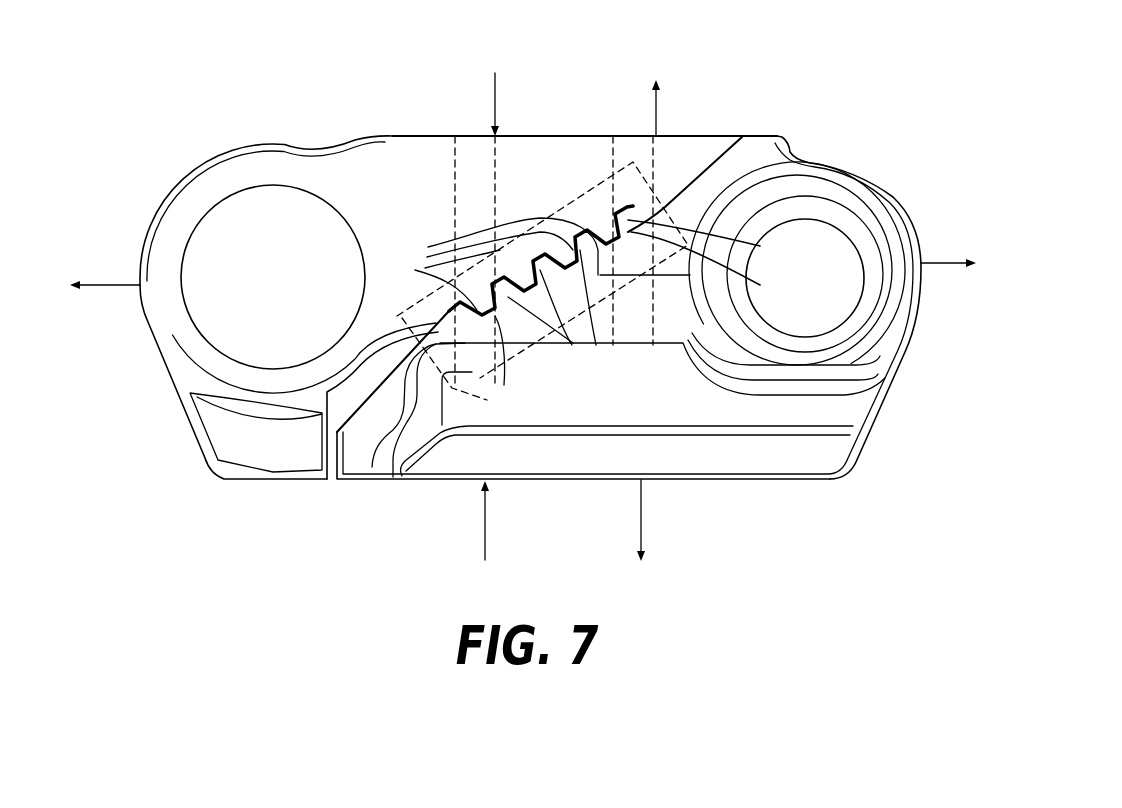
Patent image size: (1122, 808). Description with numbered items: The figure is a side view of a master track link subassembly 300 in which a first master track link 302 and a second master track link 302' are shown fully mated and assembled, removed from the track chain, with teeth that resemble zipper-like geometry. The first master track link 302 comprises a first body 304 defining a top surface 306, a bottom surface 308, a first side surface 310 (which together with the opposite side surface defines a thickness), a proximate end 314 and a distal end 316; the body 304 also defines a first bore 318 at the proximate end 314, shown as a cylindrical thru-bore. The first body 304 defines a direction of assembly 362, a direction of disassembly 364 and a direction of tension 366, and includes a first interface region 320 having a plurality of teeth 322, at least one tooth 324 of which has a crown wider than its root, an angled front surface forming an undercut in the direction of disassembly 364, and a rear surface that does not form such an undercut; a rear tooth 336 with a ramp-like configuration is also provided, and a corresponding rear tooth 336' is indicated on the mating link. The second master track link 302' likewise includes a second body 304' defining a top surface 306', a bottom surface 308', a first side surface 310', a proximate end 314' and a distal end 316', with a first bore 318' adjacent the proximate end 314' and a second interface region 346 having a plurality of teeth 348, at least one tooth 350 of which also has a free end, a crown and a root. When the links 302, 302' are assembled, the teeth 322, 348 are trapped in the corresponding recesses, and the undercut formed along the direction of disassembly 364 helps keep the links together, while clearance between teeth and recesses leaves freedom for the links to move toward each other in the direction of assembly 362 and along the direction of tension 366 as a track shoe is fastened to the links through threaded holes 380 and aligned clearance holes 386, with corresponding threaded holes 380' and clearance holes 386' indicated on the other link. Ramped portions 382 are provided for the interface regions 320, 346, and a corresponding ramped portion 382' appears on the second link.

The master track link subassembly 300 is at (601, 87).
The first master track link 302 is at (277, 167).
The second master track link 302' is at (583, 487).
The first body 304 is at (327, 221).
The second body 304' is at (628, 342).
The top surface 306 is at (585, 100).
The top surface 306' is at (627, 484).
The bottom surface 308 is at (256, 472).
The bottom surface 308' is at (849, 275).
The first side surface 310 is at (475, 260).
The first side surface 310' is at (617, 277).
The proximate end 314 is at (201, 352).
The proximate end 314' is at (837, 263).
The distal end 316 is at (534, 255).
The distal end 316' is at (402, 438).
The first bore 318 is at (245, 311).
The first bore 318' is at (834, 233).
The first interface region 320 is at (553, 209).
The plurality of teeth 322 is at (479, 271).
The tooth 324 is at (484, 370).
The rear tooth 336 is at (473, 260).
The last tooth 336' is at (720, 239).
The second interface region 346 is at (540, 331).
The plurality of teeth 348 is at (603, 321).
The tooth 350 is at (721, 265).
The direction of assembly 362 is at (497, 72).
The direction of disassembly 364 is at (658, 115).
The direction of tension 366 is at (114, 287).
The threaded holes 380 is at (444, 431).
The second abutment 380' is at (662, 335).
The ramped portions 382 is at (360, 395).
The second mating surface 382' is at (718, 152).
The clearance holes 386 is at (308, 211).
The second shoulder 386' is at (542, 233).